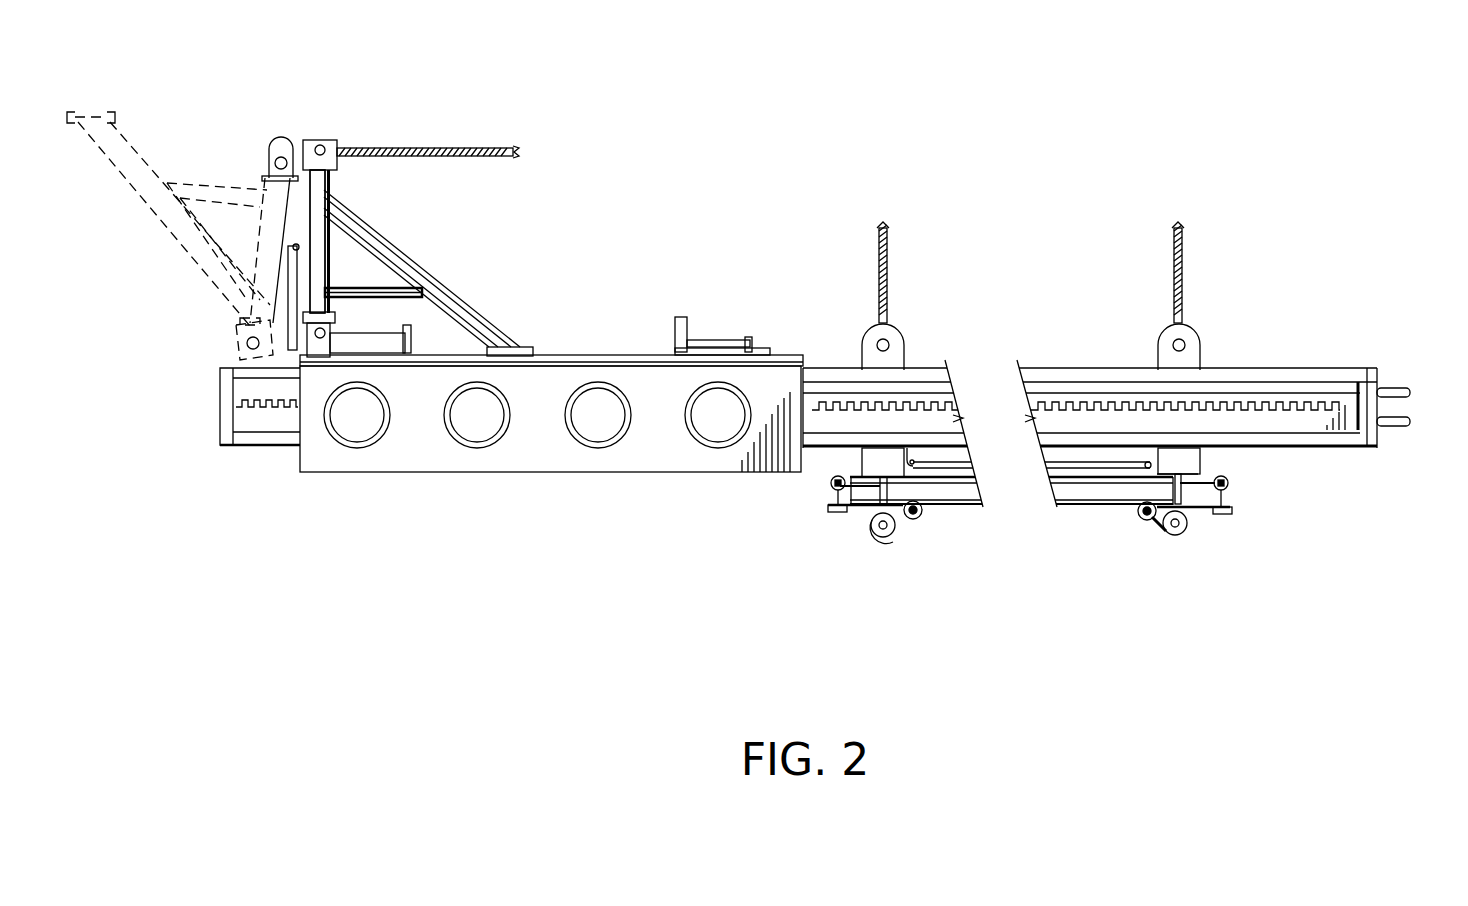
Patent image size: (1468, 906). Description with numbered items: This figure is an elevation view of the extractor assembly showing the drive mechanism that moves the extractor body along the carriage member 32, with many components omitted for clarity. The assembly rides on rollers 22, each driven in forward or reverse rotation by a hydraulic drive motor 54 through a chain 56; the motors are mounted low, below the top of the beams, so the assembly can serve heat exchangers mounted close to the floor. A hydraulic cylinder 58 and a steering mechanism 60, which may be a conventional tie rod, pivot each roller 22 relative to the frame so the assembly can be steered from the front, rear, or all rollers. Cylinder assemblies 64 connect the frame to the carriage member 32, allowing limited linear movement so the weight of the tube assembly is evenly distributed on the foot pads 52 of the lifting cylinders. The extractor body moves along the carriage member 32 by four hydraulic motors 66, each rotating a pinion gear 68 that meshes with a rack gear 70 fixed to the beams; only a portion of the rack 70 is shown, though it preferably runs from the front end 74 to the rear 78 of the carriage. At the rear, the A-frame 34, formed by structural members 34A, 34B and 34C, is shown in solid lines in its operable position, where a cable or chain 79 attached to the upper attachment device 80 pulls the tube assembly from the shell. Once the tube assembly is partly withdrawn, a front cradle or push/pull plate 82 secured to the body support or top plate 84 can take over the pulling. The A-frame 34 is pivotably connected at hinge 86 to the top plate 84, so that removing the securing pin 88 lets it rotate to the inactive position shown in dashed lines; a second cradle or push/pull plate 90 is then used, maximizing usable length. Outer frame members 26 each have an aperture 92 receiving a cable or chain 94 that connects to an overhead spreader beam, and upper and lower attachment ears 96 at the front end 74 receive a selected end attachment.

The roller 22 is at (883, 535).
The outer frame member 26 is at (893, 357).
The carriage member 32 is at (1290, 367).
The A-frame 34 is at (437, 289).
The structural member 34A is at (322, 222).
The structural member 34B is at (363, 285).
The structural member 34C is at (492, 330).
The foot pad 52 is at (900, 523).
The hydraulic drive motor 54 is at (920, 515).
The chain 56 is at (1158, 527).
The hydraulic cylinder 58 is at (830, 483).
The steering mechanism 60 is at (833, 513).
The cylinder assembly 64 is at (1030, 462).
The hydraulic motor 66 is at (363, 422).
The pinion gear 68 is at (500, 443).
The rack gear 70 is at (828, 367).
The front end 74 is at (1368, 373).
The rear 78 is at (252, 450).
The cable or chain 79 is at (445, 148).
The upper attachment device 80 is at (321, 146).
The front cradle or push/pull plate 82 is at (677, 332).
The body support or top plate 84 is at (625, 354).
The hinge 86 is at (293, 250).
The securing pin 88 is at (313, 328).
The second cradle or push/pull plate 90 is at (348, 343).
The aperture 92 is at (879, 341).
The cable or chain 94 is at (888, 267).
The attachment ears 96 is at (1400, 425).